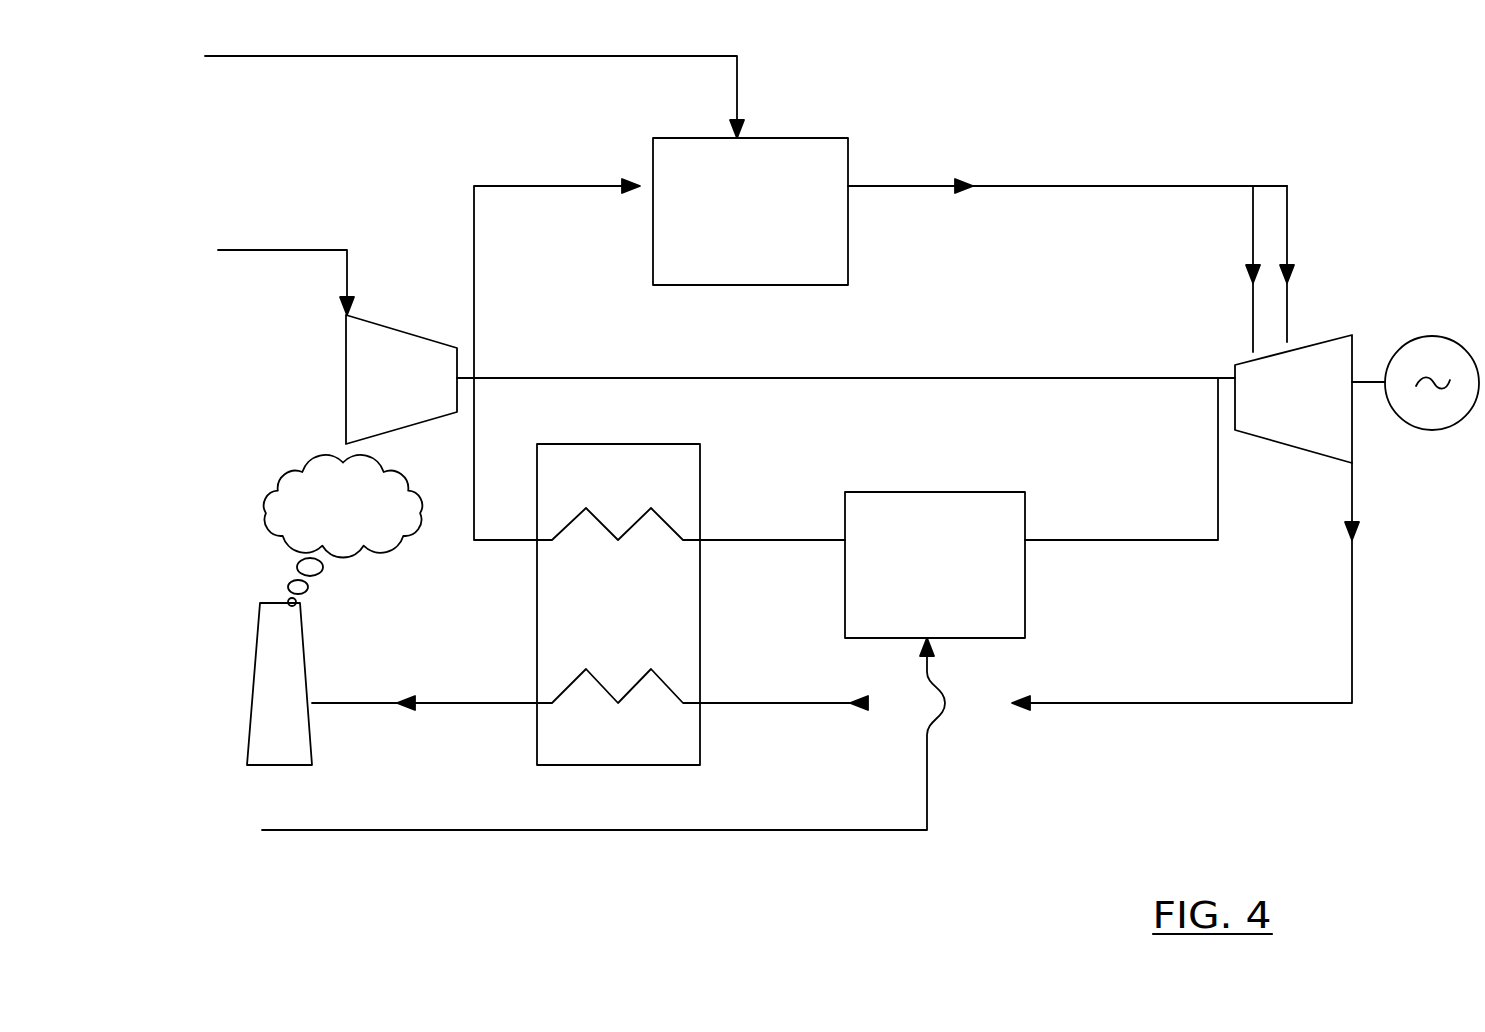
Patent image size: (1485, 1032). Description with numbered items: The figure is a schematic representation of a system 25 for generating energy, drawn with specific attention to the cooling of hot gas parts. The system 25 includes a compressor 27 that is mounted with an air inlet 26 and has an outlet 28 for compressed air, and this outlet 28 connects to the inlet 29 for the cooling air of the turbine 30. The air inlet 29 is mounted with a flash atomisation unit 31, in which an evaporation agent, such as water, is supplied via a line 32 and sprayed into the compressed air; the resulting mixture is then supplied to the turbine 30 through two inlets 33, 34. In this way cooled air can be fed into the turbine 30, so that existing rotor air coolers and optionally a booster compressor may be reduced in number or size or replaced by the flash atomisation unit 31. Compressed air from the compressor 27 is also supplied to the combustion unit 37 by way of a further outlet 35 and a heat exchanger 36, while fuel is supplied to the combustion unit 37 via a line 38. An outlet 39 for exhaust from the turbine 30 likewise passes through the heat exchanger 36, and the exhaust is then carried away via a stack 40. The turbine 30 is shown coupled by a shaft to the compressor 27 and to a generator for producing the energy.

The system for generating energy 25 is at (1200, 142).
The air inlet 26 is at (282, 251).
The compressor 27 is at (401, 379).
The outlet for compressed air 28 is at (474, 250).
The inlet for the cooling air of turbine 29 is at (1092, 186).
The turbine 30 is at (1357, 399).
The flash atomisation unit 31 is at (750, 211).
The line 32 is at (477, 57).
The inlet 33 is at (1253, 240).
The inlet 34 is at (1287, 223).
The outlet 35 is at (471, 493).
The heat exchanger 36 is at (618, 604).
The combustion unit 37 is at (935, 565).
The line 38 is at (763, 830).
The outlet for exhaust 39 is at (1352, 580).
The stack 40 is at (245, 702).